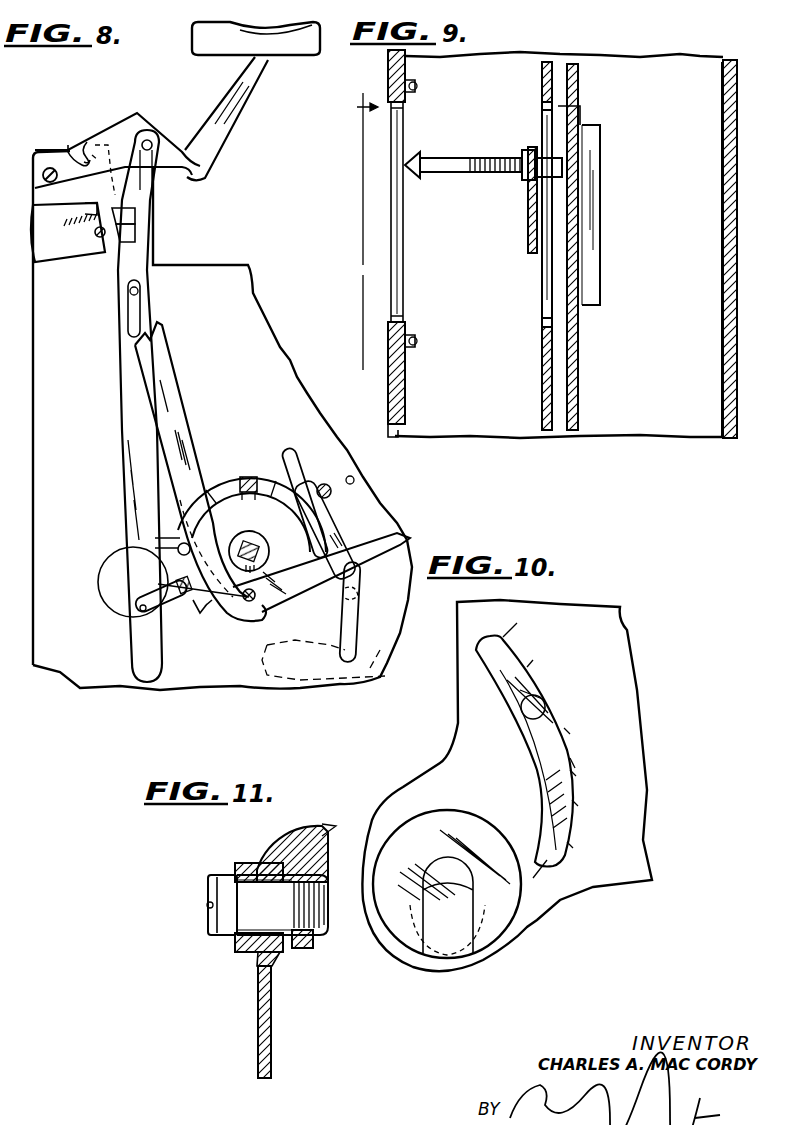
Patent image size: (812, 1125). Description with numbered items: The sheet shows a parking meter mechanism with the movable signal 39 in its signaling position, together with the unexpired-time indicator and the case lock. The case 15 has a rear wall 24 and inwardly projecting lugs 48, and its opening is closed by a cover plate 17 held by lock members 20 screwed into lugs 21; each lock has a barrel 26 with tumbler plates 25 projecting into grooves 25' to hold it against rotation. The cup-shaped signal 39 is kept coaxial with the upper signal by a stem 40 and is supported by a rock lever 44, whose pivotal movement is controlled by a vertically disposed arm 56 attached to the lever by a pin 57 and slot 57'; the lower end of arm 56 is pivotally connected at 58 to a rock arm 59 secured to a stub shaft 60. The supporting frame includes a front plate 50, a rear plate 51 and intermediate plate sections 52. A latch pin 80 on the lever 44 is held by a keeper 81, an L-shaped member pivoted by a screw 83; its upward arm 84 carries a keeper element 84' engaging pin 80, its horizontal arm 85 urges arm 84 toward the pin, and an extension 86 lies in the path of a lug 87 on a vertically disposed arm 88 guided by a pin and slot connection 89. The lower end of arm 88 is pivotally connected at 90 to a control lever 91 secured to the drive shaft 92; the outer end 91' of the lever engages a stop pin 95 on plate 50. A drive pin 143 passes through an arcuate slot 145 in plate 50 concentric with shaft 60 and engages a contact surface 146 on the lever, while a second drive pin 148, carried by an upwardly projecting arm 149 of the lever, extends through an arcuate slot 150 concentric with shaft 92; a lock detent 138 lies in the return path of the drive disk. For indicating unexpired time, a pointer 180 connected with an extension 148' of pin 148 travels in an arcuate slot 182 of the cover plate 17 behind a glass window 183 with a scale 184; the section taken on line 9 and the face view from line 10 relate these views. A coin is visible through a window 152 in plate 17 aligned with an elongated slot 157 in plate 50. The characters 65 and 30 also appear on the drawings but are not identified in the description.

In FIG. 8, the movable signal 39 is at (300, 48).
In FIG. 8, the rock lever 44 is at (210, 143).
In FIG. 8, the pin 57 is at (117, 130).
In FIG. 8, the slot 57' is at (166, 169).
In FIG. 8, the latch pin 80 is at (88, 142).
In FIG. 8, the keeper arm 84 is at (111, 161).
In FIG. 8, the stop shoulder 84' is at (60, 142).
In FIG. 8, the rear plate 51 is at (40, 193).
In FIG. 9, the rear plate 51 is at (579, 385).
In FIG. 8, the keeper 81 is at (90, 214).
In FIG. 8, the horizontally disposed arm 85 is at (40, 248).
In FIG. 8, the lug 87 is at (136, 221).
In FIG. 8, the extension 86 is at (136, 234).
In FIG. 8, the pivot screw 83 is at (92, 258).
In FIG. 8, the pin and slot connection 89 is at (134, 300).
In FIG. 8, the vertically disposed arm 88 is at (126, 370).
In FIG. 8, the front plate 50 is at (42, 367).
In FIG. 9, the front plate 50 is at (542, 380).
In FIG. 10, the front plate 50 is at (573, 803).
In FIG. 8, the vertically disposed arm 56 is at (170, 389).
In FIG. 8, the arcuate slot 145 is at (243, 492).
In FIG. 8, the lock detent 138 is at (244, 493).
In FIG. 8, the hub ring 65 is at (262, 533).
In FIG. 8, the stub shaft 60 is at (262, 550).
In FIG. 10, the stub shaft 60 is at (573, 843).
In FIG. 8, the rock arm 59 is at (261, 576).
In FIG. 8, the pivotal connection 58 is at (254, 620).
In FIG. 8, the drive pin 143 is at (148, 540).
In FIG. 8, the drive shaft 92 is at (133, 560).
In FIG. 8, the pivotal connection 90 is at (132, 606).
In FIG. 8, the control lever 91 is at (204, 624).
In FIG. 8, the outer end 91' is at (343, 562).
In FIG. 8, the contact surface 146 is at (322, 607).
In FIG. 8, the drive pin 148 is at (329, 468).
In FIG. 9, the drive pin 148 is at (530, 148).
In FIG. 9, the extension 148' is at (510, 182).
In FIG. 8, the upwardly projecting arm 149 is at (348, 524).
In FIG. 9, the upwardly projecting arm 149 is at (528, 242).
In FIG. 8, the arcuate slot 150 is at (292, 453).
In FIG. 9, the arcuate slot 150 is at (545, 305).
In FIG. 8, the stop pin 95 is at (355, 480).
In FIG. 9, the pointer 180 is at (463, 173).
In FIG. 9, the arcuate slot 182 is at (397, 249).
In FIG. 10, the arcuate slot 182 is at (536, 756).
In FIG. 9, the glass window 183 is at (404, 272).
In FIG. 10, the glass window 183 is at (546, 812).
In FIG. 9, the section line 10 is at (363, 230).
In FIG. 10, the section line 10 is at (527, 667).
In FIG. 9, the plate section 52 is at (575, 108).
In FIG. 9, the lug 48 is at (600, 232).
In FIG. 9, the case 15 is at (715, 252).
In FIG. 11, the case 15 is at (328, 832).
In FIG. 9, the rear wall 24 is at (735, 345).
In FIG. 9, the cover plate 17 is at (392, 402).
In FIG. 10, the cover plate 17 is at (611, 636).
In FIG. 11, the cover plate 17 is at (258, 1003).
In FIG. 10, the section line 9 is at (476, 648).
In FIG. 10, the lock member 20 is at (547, 697).
In FIG. 11, the lock member 20 is at (228, 911).
In FIG. 10, the boss 30 is at (567, 730).
In FIG. 11, the boss 30 is at (300, 831).
In FIG. 10, the stem 40 is at (573, 767).
In FIG. 10, the scale 184 is at (605, 762).
In FIG. 10, the window 152 is at (456, 813).
In FIG. 10, the elongated slot 157 is at (503, 938).
In FIG. 11, the tumbler plate 25 is at (254, 857).
In FIG. 11, the groove 25' is at (251, 952).
In FIG. 11, the barrel 26 is at (282, 905).
In FIG. 11, the lug 21 is at (306, 948).